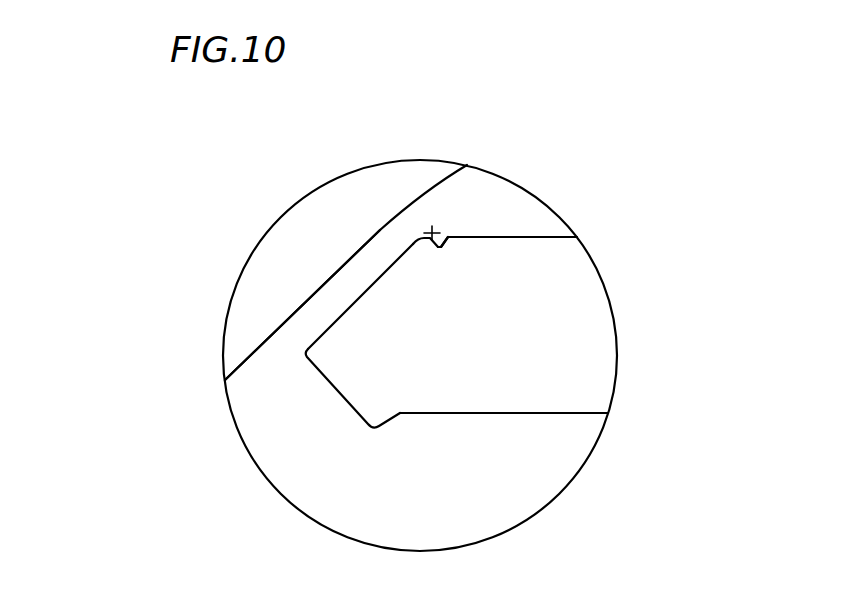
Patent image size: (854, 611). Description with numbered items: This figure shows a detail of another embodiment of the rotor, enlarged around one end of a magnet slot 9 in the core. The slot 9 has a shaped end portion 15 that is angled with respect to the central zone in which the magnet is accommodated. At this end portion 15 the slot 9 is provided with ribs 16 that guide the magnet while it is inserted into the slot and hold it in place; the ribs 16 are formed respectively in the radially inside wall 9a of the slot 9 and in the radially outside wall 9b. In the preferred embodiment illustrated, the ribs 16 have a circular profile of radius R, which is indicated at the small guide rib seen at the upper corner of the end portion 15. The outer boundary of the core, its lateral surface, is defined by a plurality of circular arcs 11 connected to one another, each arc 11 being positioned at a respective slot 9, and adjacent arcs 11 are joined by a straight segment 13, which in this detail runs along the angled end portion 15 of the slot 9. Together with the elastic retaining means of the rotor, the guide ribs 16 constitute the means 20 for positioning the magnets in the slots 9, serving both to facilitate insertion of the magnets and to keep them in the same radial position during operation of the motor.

The slot 9 is at (592, 267).
The radially inside wall 9a is at (513, 413).
The radially outside wall 9b is at (488, 238).
The circular arc 11 is at (346, 239).
The straight segment 13 is at (215, 303).
The end portion 15 is at (229, 331).
The rib 16 is at (562, 320).
The means for positioning the magnets 20 is at (290, 202).
The radius R is at (361, 178).